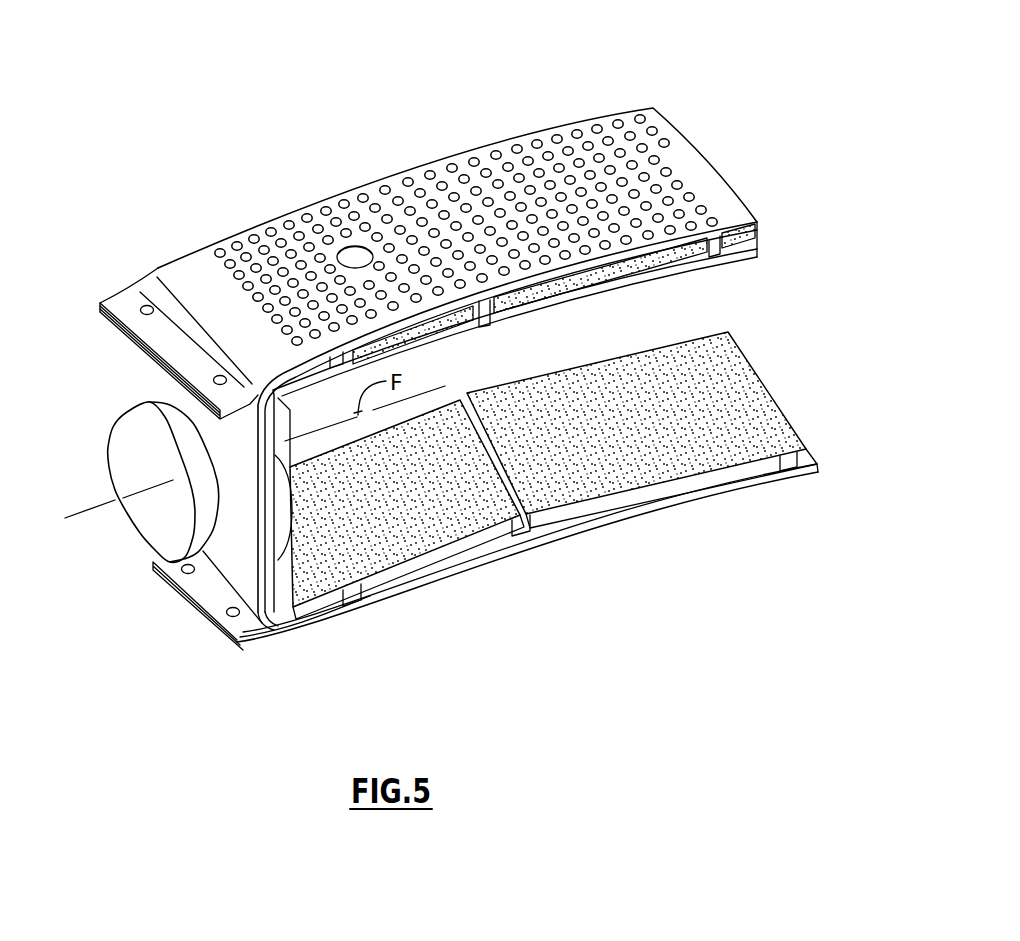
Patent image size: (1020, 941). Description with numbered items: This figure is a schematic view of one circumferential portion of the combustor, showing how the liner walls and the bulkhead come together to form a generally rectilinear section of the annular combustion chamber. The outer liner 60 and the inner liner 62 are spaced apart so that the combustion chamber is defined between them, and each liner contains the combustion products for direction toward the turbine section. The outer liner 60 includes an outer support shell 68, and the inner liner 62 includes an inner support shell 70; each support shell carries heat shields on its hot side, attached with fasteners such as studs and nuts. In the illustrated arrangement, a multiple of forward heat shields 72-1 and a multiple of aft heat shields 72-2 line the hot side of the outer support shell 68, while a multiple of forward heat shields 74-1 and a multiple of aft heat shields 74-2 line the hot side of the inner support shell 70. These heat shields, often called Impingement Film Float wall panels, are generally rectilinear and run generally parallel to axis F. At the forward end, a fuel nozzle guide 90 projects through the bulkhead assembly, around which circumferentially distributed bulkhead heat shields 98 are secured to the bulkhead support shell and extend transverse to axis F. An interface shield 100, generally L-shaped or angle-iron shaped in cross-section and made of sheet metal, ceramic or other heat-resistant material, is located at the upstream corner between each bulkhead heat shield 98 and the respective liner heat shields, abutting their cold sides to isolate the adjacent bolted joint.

The outer liner 60 is at (457, 329).
The inner liner 62 is at (534, 490).
The outer support shell 68 is at (612, 142).
The inner support shell 70 is at (483, 563).
The forward heat shields 72-1 is at (428, 340).
The aft heat shields 72-2 is at (604, 287).
The forward heat shields 74-1 is at (385, 545).
The aft heat shields 74-2 is at (730, 447).
The fuel nozzle guide 90 is at (155, 414).
The bulkhead heat shield 98 is at (293, 510).
The interface shield 100 is at (237, 385).